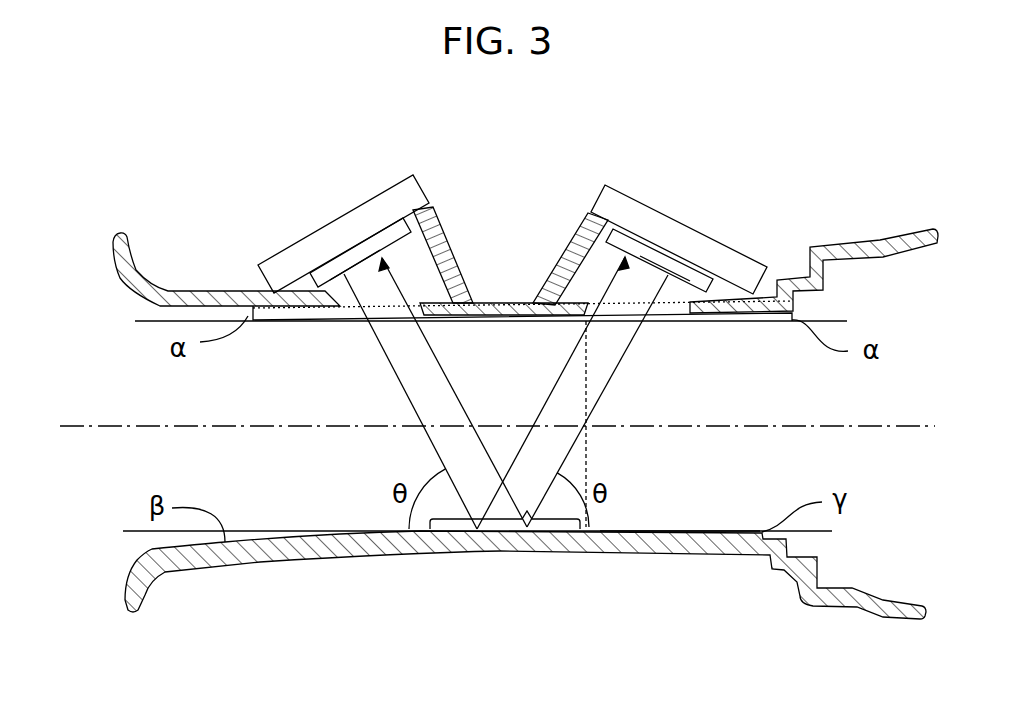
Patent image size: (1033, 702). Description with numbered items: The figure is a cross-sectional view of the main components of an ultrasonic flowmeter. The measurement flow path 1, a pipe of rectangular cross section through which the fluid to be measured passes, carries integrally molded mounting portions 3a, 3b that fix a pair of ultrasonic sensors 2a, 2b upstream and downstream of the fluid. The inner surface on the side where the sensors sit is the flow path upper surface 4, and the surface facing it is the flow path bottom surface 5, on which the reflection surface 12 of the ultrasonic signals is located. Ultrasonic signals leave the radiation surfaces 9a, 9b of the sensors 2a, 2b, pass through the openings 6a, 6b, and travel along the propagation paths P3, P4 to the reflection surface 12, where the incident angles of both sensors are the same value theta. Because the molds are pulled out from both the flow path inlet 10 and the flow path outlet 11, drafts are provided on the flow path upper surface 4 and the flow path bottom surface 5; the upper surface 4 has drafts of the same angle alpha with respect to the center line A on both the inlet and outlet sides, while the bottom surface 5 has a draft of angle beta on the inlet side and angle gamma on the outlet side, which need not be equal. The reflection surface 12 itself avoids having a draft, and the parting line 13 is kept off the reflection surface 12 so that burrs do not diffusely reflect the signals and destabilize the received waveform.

The measurement flow path 1 is at (365, 553).
The ultrasonic sensor 2a is at (347, 216).
The ultrasonic sensor 2b is at (672, 222).
The mounting portion 3a is at (425, 226).
The mounting portion 3b is at (587, 226).
The flow path upper surface 4 is at (158, 306).
The flow path bottom surface 5 is at (660, 530).
The opening 6a is at (413, 289).
The opening 6b is at (622, 306).
The radiation surface 9a is at (361, 262).
The radiation surface 9b is at (655, 265).
The flow path inlet 10 is at (200, 291).
The flow path outlet 11 is at (883, 240).
The reflection surface 12 is at (505, 501).
The parting line 13 is at (587, 442).
The first optical path P3 is at (430, 440).
The second optical path P4 is at (453, 393).
The center line A is at (484, 427).